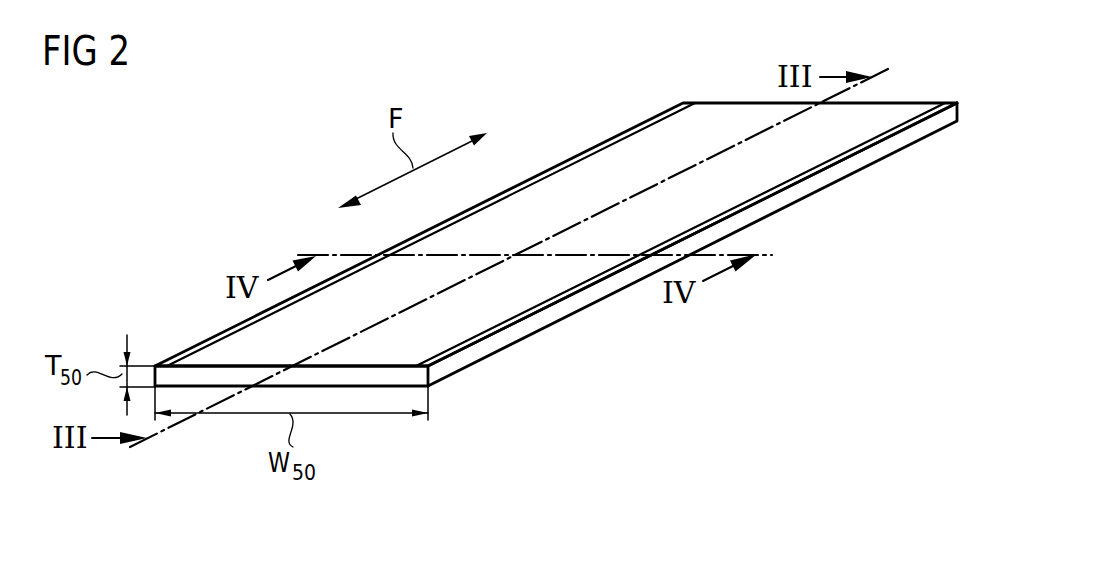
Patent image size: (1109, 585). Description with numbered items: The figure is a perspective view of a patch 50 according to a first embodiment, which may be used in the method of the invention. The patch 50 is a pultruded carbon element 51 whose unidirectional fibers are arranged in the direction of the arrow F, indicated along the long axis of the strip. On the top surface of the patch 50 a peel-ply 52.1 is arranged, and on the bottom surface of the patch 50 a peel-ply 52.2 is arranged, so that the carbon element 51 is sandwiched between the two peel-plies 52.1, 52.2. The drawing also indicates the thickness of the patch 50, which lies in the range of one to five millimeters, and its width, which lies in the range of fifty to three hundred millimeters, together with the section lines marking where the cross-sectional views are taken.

The patch 50 is at (556, 213).
The pultruded carbon element 51 is at (720, 117).
The peel-ply 52.1 is at (910, 112).
The peel-ply 52.2 is at (880, 165).